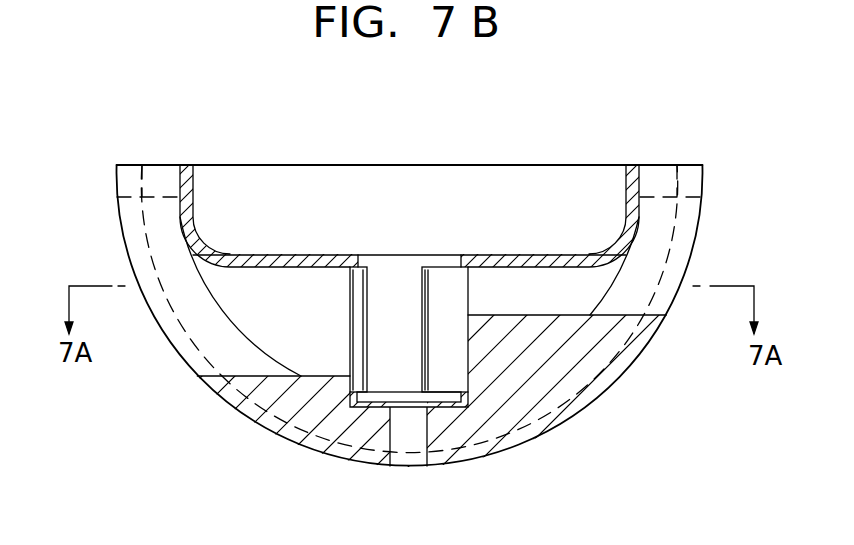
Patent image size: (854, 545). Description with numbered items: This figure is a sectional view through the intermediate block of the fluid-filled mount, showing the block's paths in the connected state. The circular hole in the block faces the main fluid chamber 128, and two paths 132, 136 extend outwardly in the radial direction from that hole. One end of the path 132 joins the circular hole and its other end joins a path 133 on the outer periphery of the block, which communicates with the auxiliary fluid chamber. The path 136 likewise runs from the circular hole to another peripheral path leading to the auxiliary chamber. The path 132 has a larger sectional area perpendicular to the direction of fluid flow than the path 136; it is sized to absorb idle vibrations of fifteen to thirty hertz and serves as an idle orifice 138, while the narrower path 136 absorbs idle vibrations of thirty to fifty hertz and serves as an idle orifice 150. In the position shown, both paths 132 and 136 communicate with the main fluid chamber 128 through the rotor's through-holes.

The main fluid chamber 128 is at (529, 223).
The path 132 is at (330, 269).
The path 133 is at (618, 368).
The path 136 is at (499, 269).
The idle orifice 138 is at (295, 309).
The idle orifice 150 is at (584, 309).